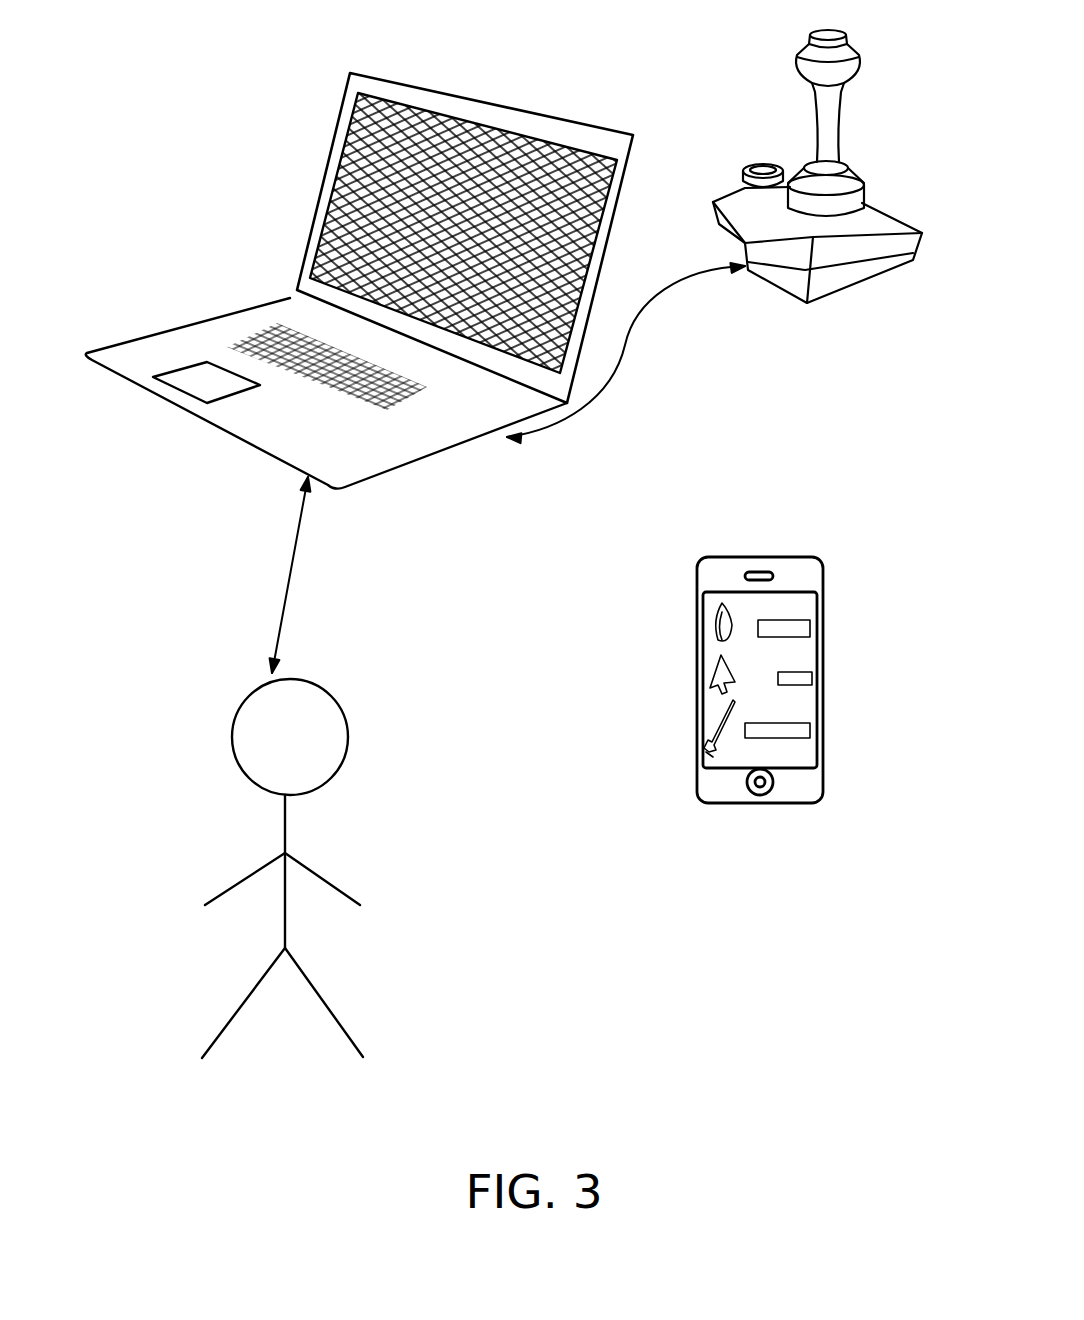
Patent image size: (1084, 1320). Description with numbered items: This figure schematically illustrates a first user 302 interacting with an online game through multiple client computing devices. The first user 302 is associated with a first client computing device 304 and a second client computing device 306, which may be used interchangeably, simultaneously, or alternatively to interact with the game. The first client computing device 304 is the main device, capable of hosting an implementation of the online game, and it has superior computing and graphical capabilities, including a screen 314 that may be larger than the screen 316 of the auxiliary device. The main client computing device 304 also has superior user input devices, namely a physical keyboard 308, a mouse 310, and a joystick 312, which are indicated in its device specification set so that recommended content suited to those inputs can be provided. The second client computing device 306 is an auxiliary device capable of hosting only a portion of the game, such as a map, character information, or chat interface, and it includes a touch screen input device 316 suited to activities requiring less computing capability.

The first user 302 is at (232, 707).
The first client computing device 304 is at (351, 258).
The second client computing device 306 is at (770, 680).
The physical keyboard 308 is at (223, 345).
The mouse 310 is at (203, 375).
The joystick 312 is at (807, 303).
The screen 314 is at (497, 100).
The touch screen input device 316 is at (697, 678).